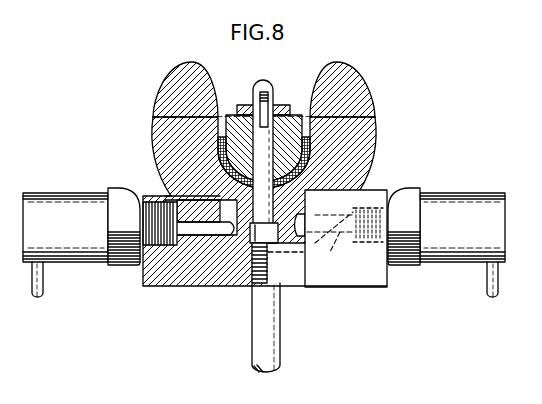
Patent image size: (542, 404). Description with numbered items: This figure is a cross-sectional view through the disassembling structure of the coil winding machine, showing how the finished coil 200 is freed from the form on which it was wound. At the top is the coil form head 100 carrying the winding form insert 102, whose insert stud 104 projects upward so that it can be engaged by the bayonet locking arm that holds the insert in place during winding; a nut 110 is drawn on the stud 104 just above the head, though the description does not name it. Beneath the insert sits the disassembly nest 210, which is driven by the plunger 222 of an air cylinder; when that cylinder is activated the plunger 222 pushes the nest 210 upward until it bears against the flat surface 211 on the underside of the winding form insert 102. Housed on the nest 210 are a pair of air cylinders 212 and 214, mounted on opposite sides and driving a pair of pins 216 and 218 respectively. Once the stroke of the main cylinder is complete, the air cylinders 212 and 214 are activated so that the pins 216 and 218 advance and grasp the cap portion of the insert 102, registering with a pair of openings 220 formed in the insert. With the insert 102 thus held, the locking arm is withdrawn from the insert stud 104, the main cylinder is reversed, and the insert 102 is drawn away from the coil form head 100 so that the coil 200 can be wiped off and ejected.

The coil form head 100 is at (374, 148).
The winding form insert 102 is at (170, 88).
The insert stud 104 is at (265, 80).
The stem nut 110 is at (281, 107).
The coil 200 is at (220, 153).
The disassembly nest 210 is at (360, 276).
The flat surface 211 is at (291, 247).
The air cylinder 212 is at (60, 197).
The air cylinder 214 is at (462, 198).
The pin 216 is at (204, 236).
The pin 218 is at (345, 233).
The openings 220 is at (250, 243).
The plunger 222 is at (276, 327).